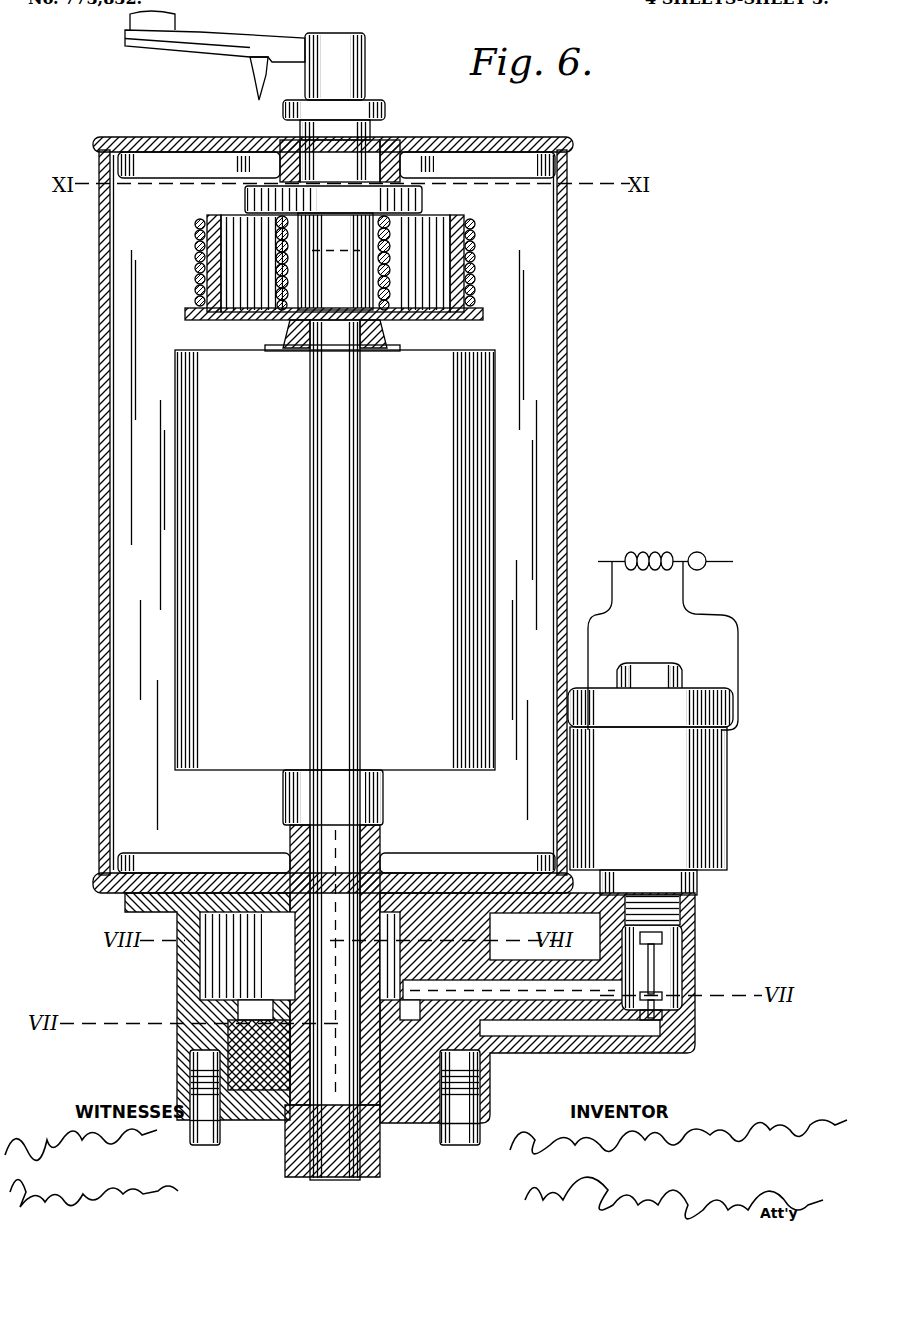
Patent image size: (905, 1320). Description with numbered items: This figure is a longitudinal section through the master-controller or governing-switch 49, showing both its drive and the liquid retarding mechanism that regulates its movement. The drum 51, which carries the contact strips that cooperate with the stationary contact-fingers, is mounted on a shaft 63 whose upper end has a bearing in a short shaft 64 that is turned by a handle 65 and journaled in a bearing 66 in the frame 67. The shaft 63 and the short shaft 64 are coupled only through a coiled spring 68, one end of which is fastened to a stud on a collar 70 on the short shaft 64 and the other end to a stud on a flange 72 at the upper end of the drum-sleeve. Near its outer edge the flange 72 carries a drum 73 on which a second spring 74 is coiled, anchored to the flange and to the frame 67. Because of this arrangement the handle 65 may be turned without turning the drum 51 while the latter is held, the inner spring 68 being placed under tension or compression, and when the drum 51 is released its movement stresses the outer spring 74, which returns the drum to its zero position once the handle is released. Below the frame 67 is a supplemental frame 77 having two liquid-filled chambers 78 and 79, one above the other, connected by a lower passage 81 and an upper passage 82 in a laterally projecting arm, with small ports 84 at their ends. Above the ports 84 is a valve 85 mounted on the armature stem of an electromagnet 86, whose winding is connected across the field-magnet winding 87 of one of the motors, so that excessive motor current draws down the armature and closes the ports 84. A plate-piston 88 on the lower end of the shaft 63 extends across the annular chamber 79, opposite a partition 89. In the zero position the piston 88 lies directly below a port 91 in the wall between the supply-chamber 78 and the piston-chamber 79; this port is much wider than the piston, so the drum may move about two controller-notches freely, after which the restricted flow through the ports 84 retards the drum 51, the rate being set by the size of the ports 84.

The governing-switch 49 is at (311, 512).
The drum 51 is at (335, 560).
The shaft 63 is at (332, 606).
The short shaft 64 is at (335, 261).
The handle 65 is at (252, 44).
The bearing 66 is at (400, 160).
The frame 67 is at (333, 503).
The coiled spring 68 is at (391, 252).
The collar 70 is at (333, 199).
The flange 72 is at (334, 325).
The drum 73 is at (456, 232).
The second spring 74 is at (194, 268).
The supplemental frame 77 is at (410, 1035).
The chamber 78 is at (300, 956).
The chamber 79 is at (258, 1095).
The lower passage 81 is at (530, 1022).
The upper passage 82 is at (513, 960).
The ports 84 is at (664, 1016).
The valve 85 is at (652, 992).
The electromagnet 86 is at (650, 779).
The field-magnet winding 87 is at (663, 626).
The plate-piston 88 is at (259, 1055).
The partition 89 is at (393, 1090).
The port 91 is at (256, 1005).